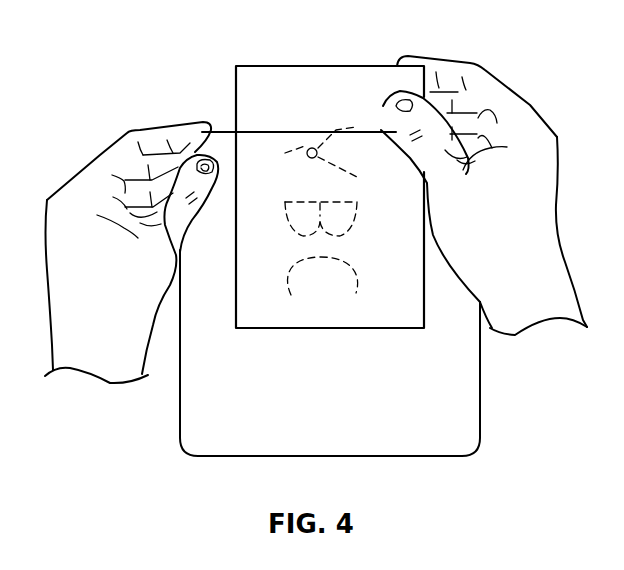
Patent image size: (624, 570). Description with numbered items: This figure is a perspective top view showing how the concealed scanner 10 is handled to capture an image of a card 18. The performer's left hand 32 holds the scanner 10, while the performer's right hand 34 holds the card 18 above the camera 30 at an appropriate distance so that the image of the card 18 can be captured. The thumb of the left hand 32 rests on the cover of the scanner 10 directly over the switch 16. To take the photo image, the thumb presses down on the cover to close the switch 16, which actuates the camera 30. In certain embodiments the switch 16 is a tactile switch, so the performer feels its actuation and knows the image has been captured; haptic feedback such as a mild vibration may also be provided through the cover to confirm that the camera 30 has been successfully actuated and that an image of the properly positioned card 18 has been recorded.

The concealed scanner 10 is at (420, 474).
The switch 16 is at (199, 165).
The card 18 is at (290, 327).
The camera 30 is at (309, 148).
The left hand 32 is at (82, 168).
The right hand 34 is at (553, 172).